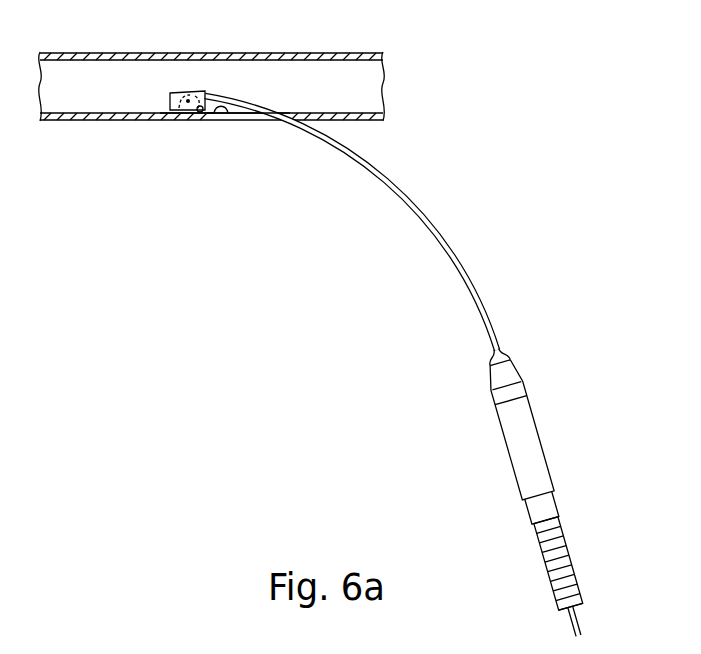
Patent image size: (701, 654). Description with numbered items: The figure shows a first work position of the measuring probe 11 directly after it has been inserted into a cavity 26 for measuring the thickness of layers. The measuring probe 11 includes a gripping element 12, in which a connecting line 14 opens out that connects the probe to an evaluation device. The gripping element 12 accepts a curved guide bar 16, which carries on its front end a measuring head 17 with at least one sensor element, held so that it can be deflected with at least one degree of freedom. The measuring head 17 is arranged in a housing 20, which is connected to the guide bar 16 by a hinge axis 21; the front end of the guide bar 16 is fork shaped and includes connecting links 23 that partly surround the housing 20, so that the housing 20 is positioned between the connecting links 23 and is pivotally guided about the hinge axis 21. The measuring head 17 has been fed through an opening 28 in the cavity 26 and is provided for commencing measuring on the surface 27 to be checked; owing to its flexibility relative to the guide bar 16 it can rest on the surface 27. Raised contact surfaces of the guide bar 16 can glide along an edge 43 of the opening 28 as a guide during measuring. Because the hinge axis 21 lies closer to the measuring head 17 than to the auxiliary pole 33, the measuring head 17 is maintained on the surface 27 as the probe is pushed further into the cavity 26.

The measuring probe 11 is at (426, 366).
The gripping element 12 is at (532, 452).
The connecting line 14 is at (585, 625).
The guide bar 16 is at (449, 244).
The measuring head 17 is at (167, 138).
The housing 20 is at (170, 93).
The hinge axis 21 is at (188, 99).
The connecting links 23 is at (200, 93).
The cavity 26 is at (52, 140).
The surface 27 is at (100, 108).
The opening 28 is at (240, 119).
The auxiliary pole 33 is at (202, 115).
The edge 43 is at (220, 113).